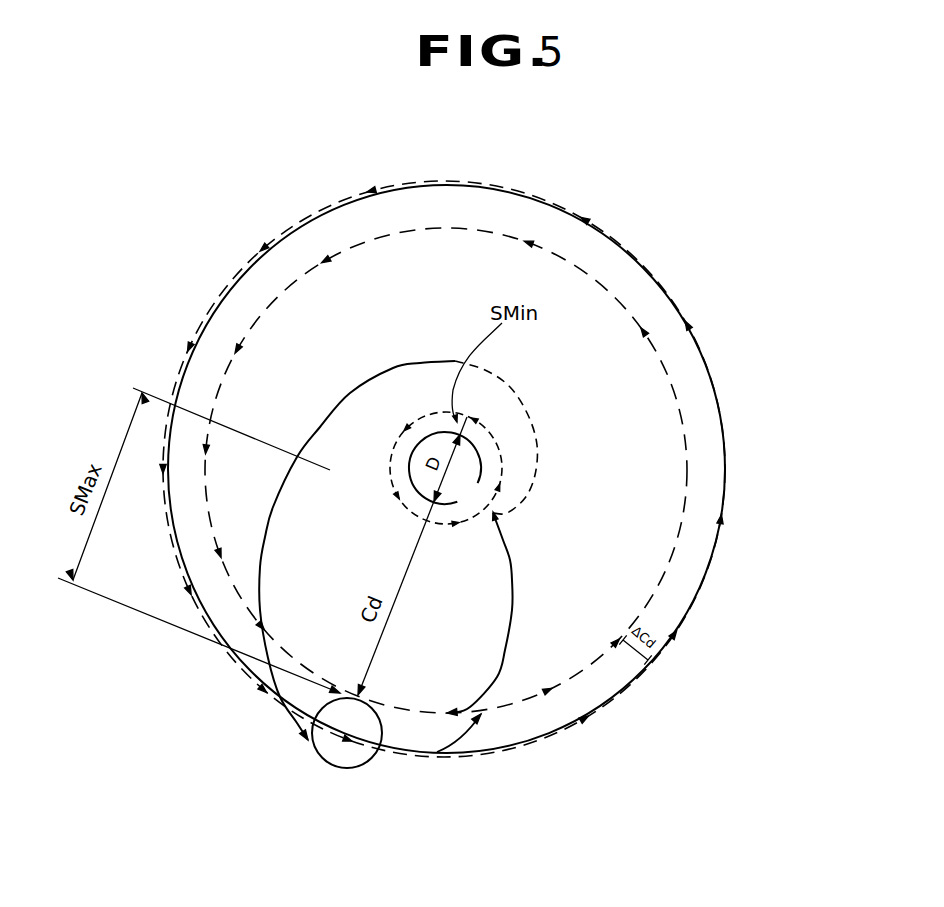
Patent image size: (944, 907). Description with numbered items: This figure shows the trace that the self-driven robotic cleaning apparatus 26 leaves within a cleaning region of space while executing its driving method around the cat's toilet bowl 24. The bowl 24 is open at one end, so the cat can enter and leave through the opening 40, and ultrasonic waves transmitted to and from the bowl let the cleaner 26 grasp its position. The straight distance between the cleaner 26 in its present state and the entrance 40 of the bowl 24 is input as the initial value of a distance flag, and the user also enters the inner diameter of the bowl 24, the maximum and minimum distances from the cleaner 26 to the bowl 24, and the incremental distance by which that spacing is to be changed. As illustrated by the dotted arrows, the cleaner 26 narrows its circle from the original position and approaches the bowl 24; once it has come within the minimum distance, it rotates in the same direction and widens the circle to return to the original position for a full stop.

The cat's toilet bowl 24 is at (418, 498).
The opening (entrance) of the bowl 40 is at (423, 497).
The self-driven robotic cleaning apparatus (cleaner) 26 is at (345, 745).